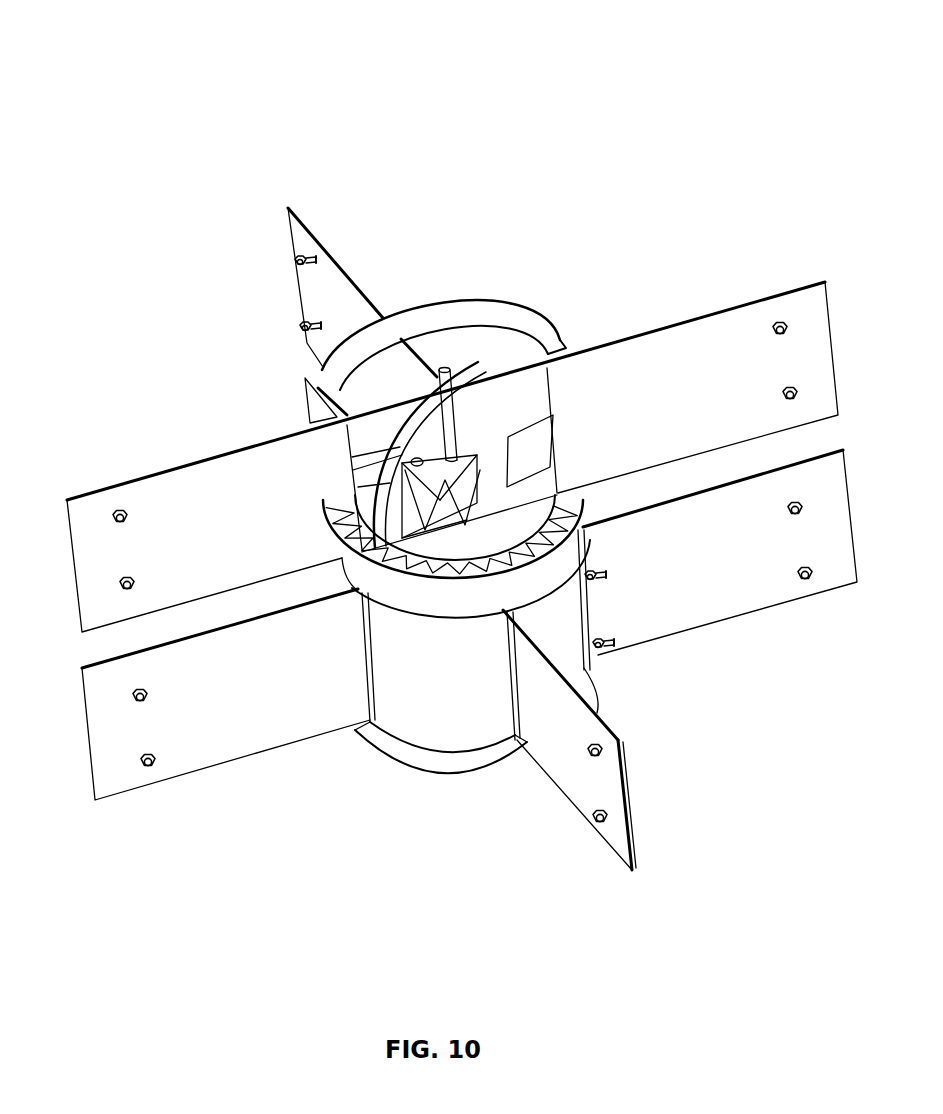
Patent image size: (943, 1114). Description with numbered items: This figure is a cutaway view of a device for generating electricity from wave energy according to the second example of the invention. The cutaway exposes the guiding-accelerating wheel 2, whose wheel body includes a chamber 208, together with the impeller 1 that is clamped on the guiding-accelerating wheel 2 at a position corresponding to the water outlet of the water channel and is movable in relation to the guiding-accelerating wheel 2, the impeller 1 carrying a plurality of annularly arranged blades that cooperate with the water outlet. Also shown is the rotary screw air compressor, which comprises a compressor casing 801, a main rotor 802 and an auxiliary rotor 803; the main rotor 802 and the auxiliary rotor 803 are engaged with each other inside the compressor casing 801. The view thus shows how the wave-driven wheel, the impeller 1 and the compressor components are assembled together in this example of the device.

The impeller 1 is at (520, 578).
The guiding-accelerating wheel 2 is at (540, 278).
The chamber 208 is at (464, 415).
The compressor casing 801 is at (395, 527).
The main rotor 802 is at (476, 472).
The auxiliary rotor 803 is at (438, 484).